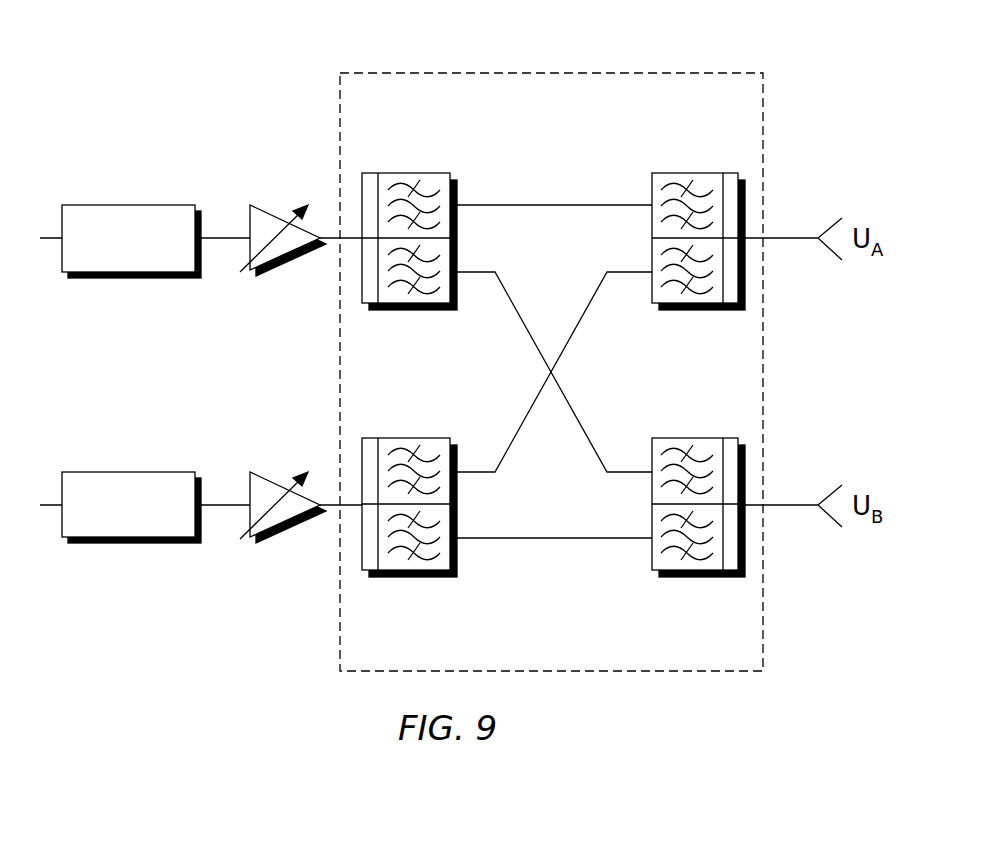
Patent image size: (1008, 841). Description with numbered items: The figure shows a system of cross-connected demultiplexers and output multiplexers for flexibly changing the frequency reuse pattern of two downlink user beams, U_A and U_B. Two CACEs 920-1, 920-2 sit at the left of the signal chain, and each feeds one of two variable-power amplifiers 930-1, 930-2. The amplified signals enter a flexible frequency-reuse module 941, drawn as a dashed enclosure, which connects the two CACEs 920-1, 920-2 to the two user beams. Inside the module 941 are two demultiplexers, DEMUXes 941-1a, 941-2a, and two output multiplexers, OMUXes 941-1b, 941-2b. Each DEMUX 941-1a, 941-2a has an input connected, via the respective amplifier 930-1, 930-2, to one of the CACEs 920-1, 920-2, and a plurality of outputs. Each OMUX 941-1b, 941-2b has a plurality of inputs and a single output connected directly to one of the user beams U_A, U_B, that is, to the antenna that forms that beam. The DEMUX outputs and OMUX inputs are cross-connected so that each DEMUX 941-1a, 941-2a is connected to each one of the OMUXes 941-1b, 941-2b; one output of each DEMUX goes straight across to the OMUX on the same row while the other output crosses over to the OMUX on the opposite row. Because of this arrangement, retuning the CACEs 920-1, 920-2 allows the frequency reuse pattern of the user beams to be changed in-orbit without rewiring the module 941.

The CACE 920-1 is at (132, 205).
The CACE 920-2 is at (131, 539).
The variable-power amplifier 930-1 is at (277, 216).
The variable-power amplifier 930-2 is at (275, 540).
The flexible frequency-reuse module 941 is at (538, 72).
The demultiplexer (DEMUX) 941-1a is at (410, 173).
The demultiplexer (DEMUX) 941-2a is at (410, 575).
The output multiplexer (OMUX) 941-1b is at (699, 173).
The output multiplexer (OMUX) 941-2b is at (695, 575).